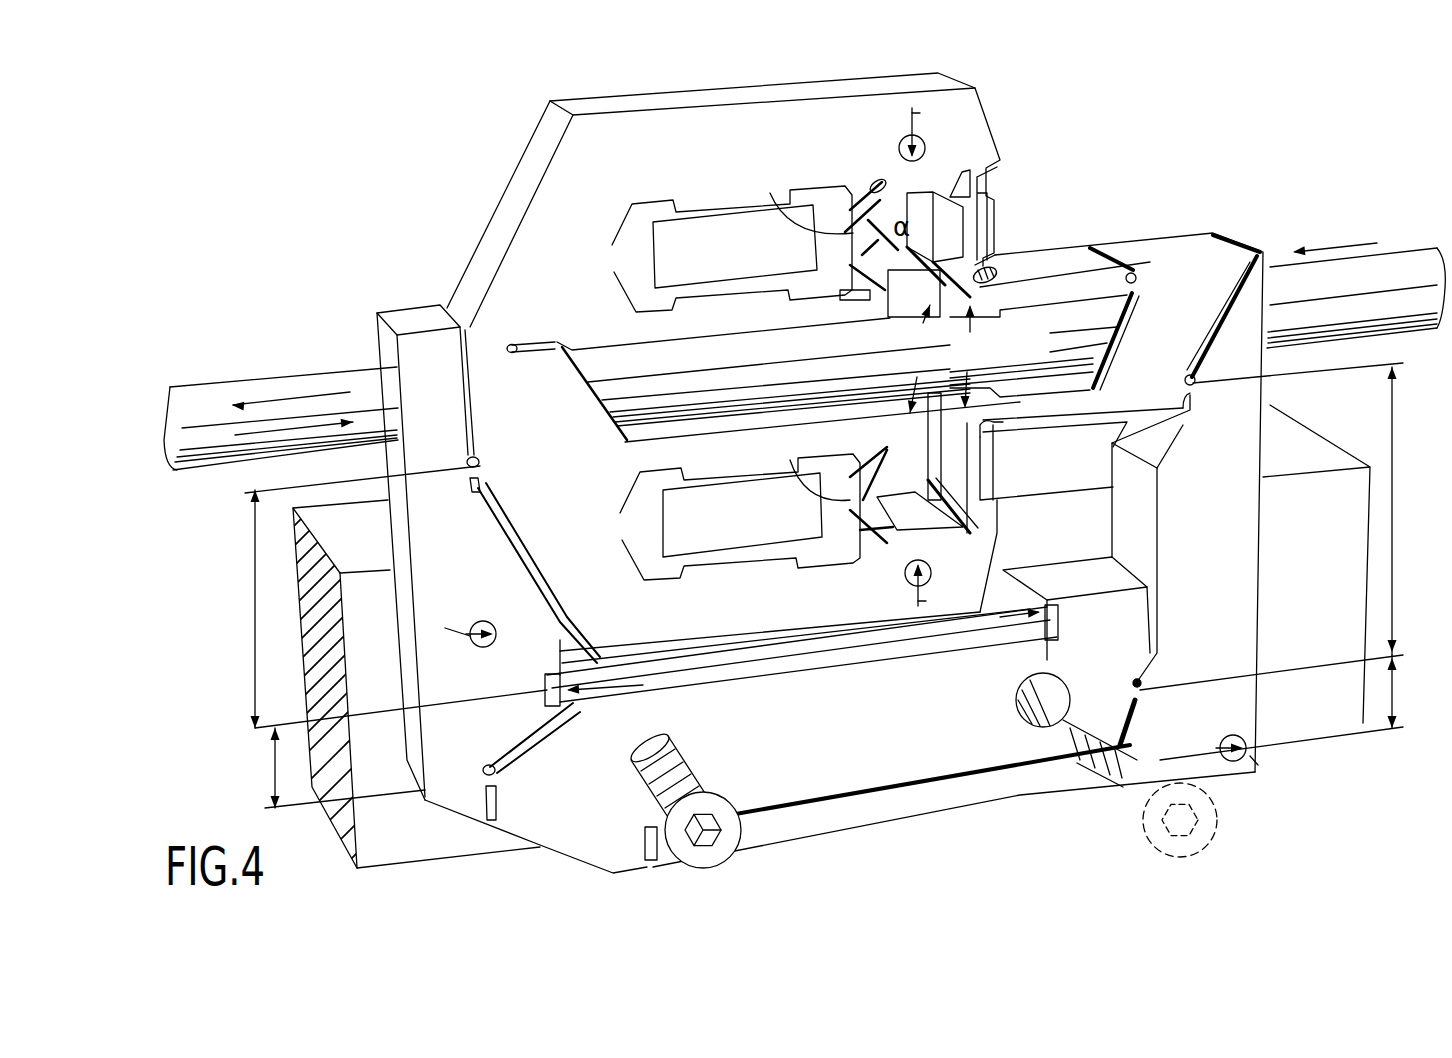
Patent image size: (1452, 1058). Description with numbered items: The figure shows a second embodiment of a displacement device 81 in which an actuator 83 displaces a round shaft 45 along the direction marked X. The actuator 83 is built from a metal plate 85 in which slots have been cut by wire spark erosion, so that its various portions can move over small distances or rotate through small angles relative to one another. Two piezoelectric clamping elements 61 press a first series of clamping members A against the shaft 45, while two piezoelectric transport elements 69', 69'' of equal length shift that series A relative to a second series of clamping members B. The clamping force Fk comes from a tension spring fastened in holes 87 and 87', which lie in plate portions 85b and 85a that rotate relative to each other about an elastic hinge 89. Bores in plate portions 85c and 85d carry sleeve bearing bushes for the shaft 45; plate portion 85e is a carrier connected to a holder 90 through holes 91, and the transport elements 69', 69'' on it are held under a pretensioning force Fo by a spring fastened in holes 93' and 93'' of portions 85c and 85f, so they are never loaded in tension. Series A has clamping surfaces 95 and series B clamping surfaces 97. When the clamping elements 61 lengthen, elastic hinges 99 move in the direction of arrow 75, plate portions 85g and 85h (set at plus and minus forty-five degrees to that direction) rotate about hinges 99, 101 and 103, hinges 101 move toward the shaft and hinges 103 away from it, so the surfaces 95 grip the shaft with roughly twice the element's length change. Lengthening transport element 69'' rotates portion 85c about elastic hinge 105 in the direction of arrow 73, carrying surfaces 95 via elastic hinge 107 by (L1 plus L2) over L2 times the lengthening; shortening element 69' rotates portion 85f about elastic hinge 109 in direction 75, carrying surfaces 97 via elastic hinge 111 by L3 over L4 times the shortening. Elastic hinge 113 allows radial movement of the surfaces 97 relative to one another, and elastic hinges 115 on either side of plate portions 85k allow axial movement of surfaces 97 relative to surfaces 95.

The displacement device 81 is at (305, 228).
The actuator 83 is at (457, 167).
The metal plate 85 is at (528, 852).
The plate portion 85a is at (628, 145).
The plate portion 85b is at (973, 565).
The plate portion 85c is at (425, 350).
The plate portion 85d is at (1185, 272).
The plate portion (carrier) 85e is at (833, 775).
The plate portion 85f is at (1183, 508).
The plate portion 85g is at (870, 290).
The plate portion 85h is at (855, 205).
The plate portions 85k is at (980, 228).
The hole 87 is at (914, 590).
The hole 87' is at (970, 129).
The elastic hinge 89 is at (498, 345).
The holder 90 is at (428, 845).
The holes 91 is at (640, 768).
The hole 93' is at (470, 611).
The hole 93'' is at (1237, 751).
The clamping surfaces 95 is at (900, 323).
The clamping surfaces 97 is at (977, 382).
The elastic hinges 99 is at (801, 330).
The elastic hinges 101 is at (929, 255).
The elastic hinges 103 is at (890, 196).
The elastic hinge 105 is at (503, 773).
The elastic hinge 107 is at (480, 462).
The elastic hinge 109 is at (1130, 690).
The elastic hinge 111 is at (1188, 382).
The elastic hinge 113 is at (1143, 280).
The elastic hinges 115 is at (975, 185).
The round shaft 45 is at (200, 390).
The piezoelectric clamping elements 61 is at (705, 240).
The piezoelectric transport element 69' is at (910, 802).
The piezoelectric transport element 69'' is at (801, 661).
The arrow (direction) 73 is at (282, 400).
The arrow (direction) 75 is at (288, 427).
The series of clamping members A is at (917, 358).
The series of clamping members B is at (972, 356).
The direction X is at (1335, 240).
The lever length L1 is at (262, 612).
The lever length L2 is at (275, 776).
The lever length L3 is at (1392, 528).
The lever length L4 is at (1392, 693).